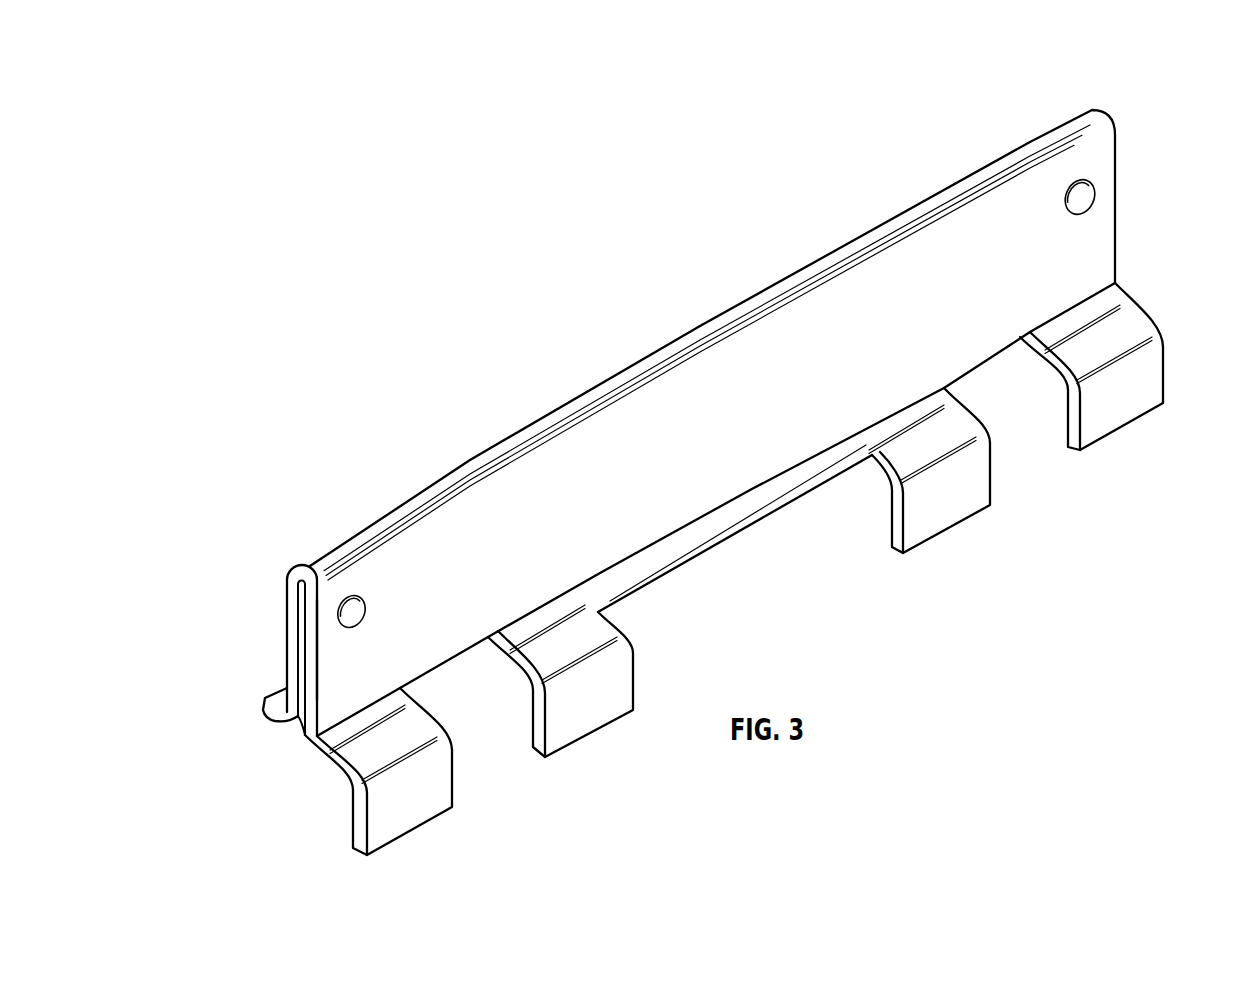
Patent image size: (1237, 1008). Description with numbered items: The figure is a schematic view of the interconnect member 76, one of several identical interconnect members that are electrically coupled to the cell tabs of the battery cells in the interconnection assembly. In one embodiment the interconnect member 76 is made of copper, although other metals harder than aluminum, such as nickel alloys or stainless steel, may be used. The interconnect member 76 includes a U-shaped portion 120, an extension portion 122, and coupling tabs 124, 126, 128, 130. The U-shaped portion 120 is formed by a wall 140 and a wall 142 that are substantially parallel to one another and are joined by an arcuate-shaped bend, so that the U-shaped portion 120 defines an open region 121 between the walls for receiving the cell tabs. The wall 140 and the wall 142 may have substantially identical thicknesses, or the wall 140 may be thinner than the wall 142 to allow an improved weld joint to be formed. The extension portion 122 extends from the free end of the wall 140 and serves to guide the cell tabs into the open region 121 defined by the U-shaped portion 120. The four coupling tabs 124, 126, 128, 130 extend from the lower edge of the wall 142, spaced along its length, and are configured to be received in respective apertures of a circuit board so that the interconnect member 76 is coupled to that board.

The interconnect member 76 is at (897, 157).
The U-shaped portion 120 is at (283, 579).
The open region 121 is at (296, 724).
The extension portion 122 is at (270, 712).
The coupling tab 124 is at (422, 812).
The coupling tab 126 is at (597, 716).
The coupling tab 128 is at (940, 522).
The coupling tab 130 is at (1113, 422).
The wall 140 is at (290, 660).
The wall 142 is at (311, 670).